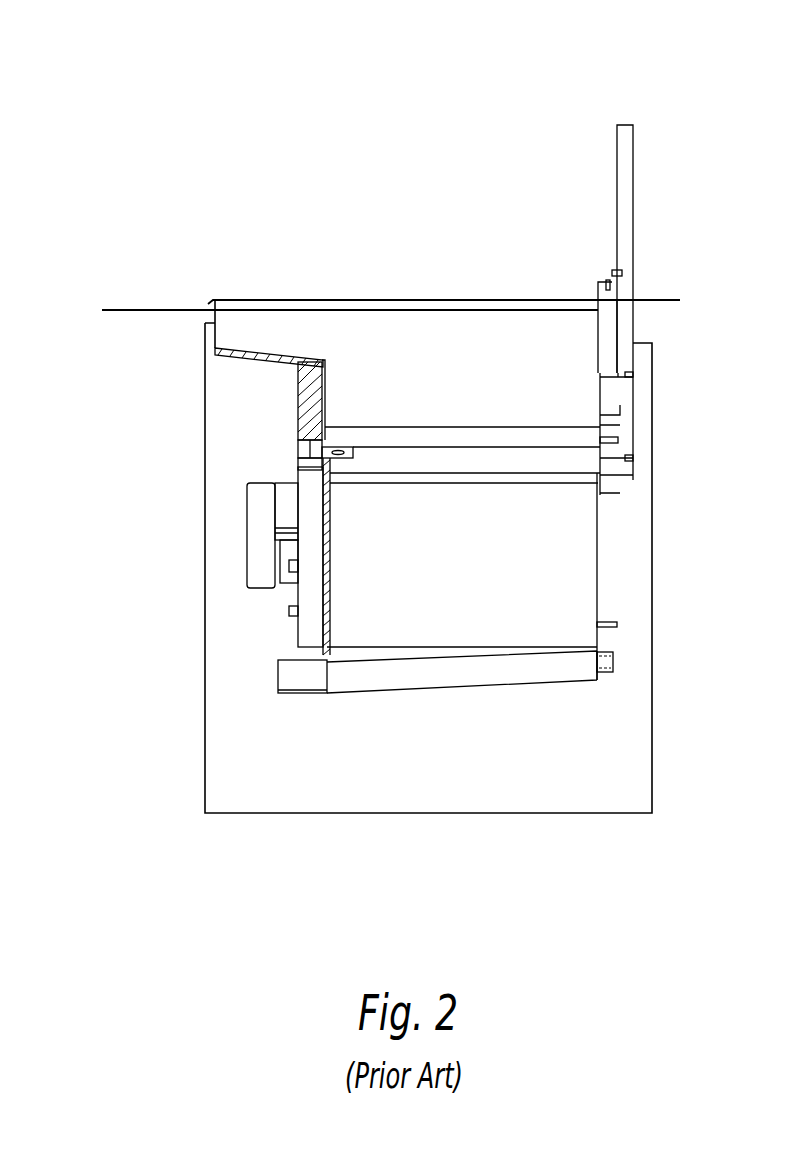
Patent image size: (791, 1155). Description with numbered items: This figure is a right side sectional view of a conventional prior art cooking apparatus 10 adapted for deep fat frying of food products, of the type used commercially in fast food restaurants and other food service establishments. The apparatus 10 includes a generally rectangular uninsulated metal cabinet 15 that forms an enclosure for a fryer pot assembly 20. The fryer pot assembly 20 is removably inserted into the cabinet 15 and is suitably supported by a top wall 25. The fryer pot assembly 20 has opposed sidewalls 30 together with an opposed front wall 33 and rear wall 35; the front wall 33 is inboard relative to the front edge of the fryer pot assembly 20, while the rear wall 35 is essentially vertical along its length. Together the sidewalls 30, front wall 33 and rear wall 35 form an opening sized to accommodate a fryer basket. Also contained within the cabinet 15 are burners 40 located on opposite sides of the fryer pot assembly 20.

The cooking apparatus 10 is at (595, 102).
The cabinet 15 is at (205, 527).
The fryer pot assembly 20 is at (315, 300).
The top wall 25 is at (133, 310).
The sidewalls 30 is at (547, 398).
The front wall 33 is at (298, 389).
The rear wall 35 is at (600, 323).
The burners 40 is at (572, 600).